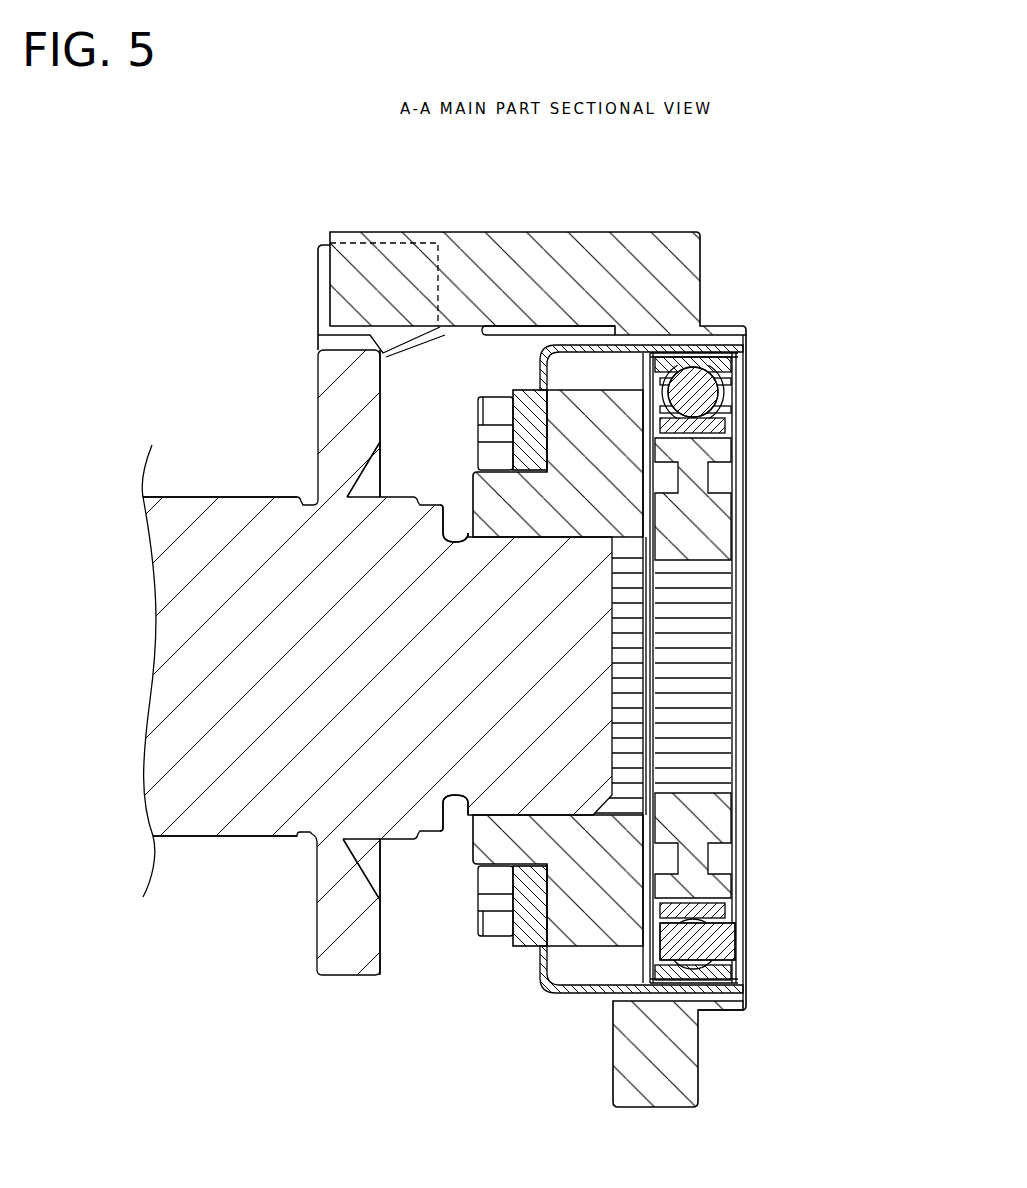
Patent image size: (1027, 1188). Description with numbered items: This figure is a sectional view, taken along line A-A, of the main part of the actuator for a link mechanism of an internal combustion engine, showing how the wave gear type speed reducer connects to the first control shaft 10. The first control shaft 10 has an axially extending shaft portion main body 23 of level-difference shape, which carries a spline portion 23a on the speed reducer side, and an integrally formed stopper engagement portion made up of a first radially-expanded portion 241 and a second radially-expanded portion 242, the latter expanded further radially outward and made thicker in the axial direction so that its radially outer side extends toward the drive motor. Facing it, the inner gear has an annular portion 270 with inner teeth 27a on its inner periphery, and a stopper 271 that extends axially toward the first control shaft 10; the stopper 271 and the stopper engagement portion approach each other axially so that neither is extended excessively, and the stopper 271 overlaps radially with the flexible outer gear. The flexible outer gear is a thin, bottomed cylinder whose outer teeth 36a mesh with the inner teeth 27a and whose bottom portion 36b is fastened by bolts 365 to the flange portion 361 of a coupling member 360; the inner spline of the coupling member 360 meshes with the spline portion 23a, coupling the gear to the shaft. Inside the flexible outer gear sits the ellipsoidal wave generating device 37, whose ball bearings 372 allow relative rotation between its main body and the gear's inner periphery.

The first control shaft 10 is at (200, 846).
The shaft portion main body 23 is at (247, 822).
The spline portion 23a is at (513, 818).
The first radially-expanded portion 241 is at (347, 968).
The second radially-expanded portion 242 is at (317, 290).
The stopper 271 is at (445, 232).
The annular portion 270 is at (670, 1073).
The inner teeth 27a is at (733, 973).
The outer teeth 36a is at (627, 1000).
The bottom portion 36b is at (520, 400).
The coupling member 360 is at (566, 958).
The flange portion 361 is at (553, 810).
The bolts 365 is at (480, 918).
The wave generating device 37 is at (740, 512).
The ball bearings 372 is at (703, 390).